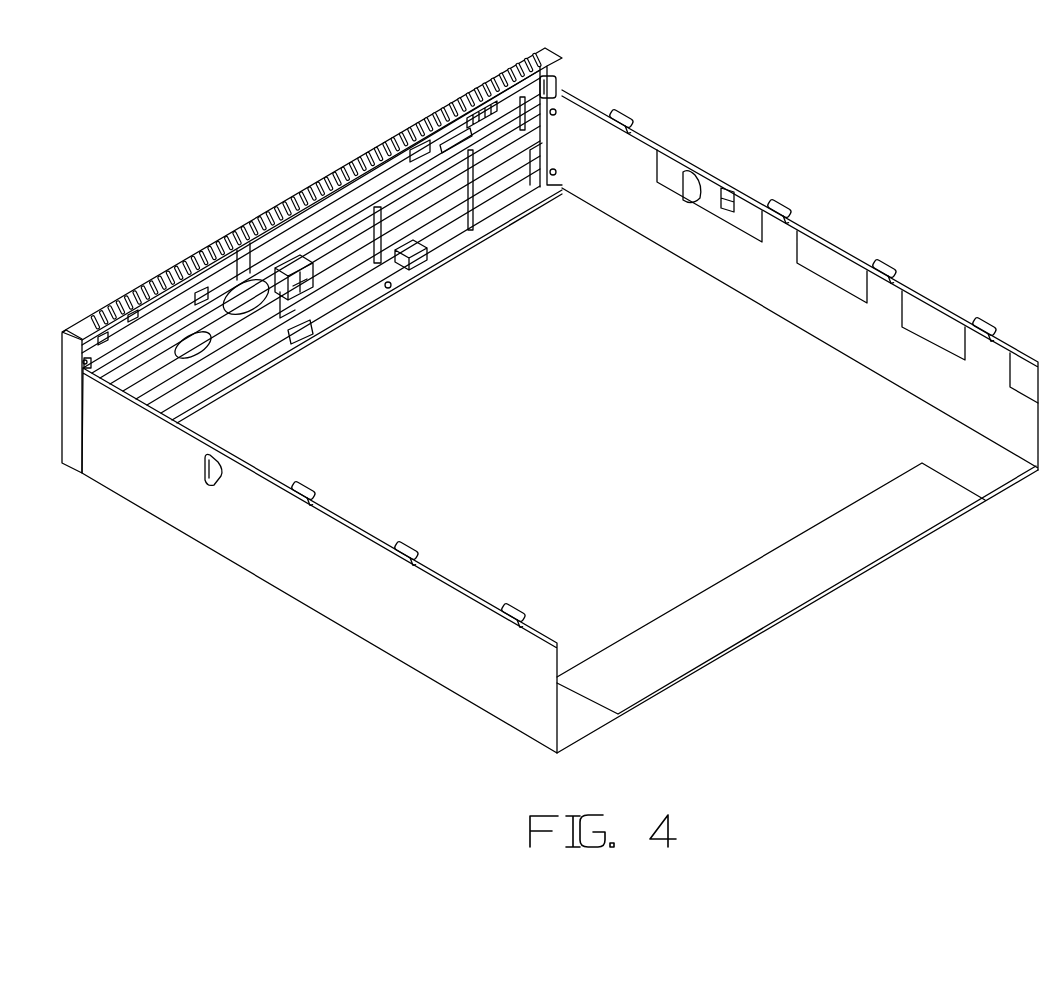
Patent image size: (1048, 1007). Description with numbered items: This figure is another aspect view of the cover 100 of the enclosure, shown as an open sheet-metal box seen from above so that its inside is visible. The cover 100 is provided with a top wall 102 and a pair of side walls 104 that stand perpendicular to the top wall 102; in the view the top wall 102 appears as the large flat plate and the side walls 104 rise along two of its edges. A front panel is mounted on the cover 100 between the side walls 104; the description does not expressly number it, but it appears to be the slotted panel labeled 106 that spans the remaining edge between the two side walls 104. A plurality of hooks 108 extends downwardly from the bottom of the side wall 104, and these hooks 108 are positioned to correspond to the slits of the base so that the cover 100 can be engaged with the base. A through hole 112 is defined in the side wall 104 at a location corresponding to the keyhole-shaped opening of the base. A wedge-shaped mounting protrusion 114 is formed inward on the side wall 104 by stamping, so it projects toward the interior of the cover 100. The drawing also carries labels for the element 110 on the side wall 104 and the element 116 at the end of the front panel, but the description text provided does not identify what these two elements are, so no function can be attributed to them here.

The cover 100 is at (684, 54).
The top wall 102 is at (807, 493).
The side walls 104 is at (402, 605).
The rear panel 106 is at (155, 355).
The hooks 108 is at (780, 215).
The hole 110 is at (703, 192).
The through hole 112 is at (200, 473).
The wedge-shaped mounting protrusion 114 is at (735, 200).
The hook 116 is at (558, 138).